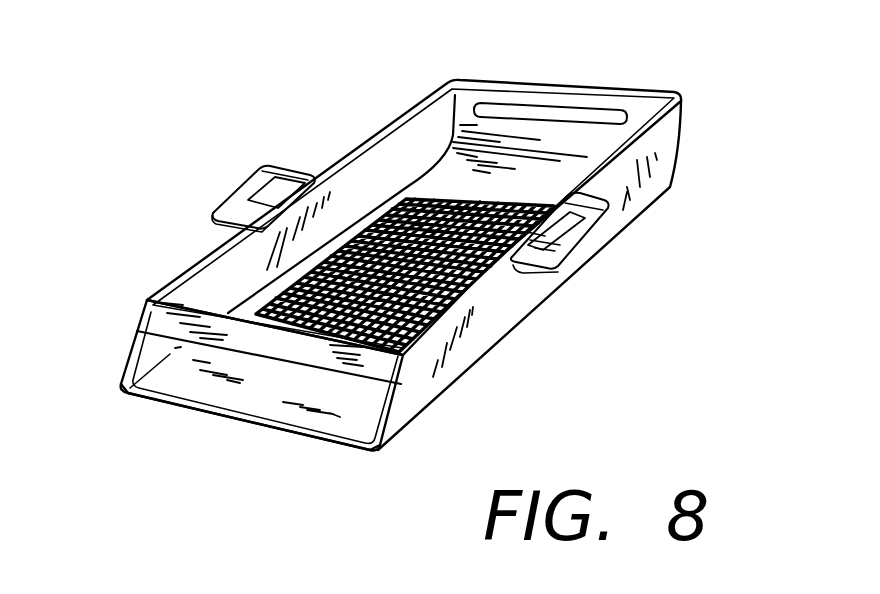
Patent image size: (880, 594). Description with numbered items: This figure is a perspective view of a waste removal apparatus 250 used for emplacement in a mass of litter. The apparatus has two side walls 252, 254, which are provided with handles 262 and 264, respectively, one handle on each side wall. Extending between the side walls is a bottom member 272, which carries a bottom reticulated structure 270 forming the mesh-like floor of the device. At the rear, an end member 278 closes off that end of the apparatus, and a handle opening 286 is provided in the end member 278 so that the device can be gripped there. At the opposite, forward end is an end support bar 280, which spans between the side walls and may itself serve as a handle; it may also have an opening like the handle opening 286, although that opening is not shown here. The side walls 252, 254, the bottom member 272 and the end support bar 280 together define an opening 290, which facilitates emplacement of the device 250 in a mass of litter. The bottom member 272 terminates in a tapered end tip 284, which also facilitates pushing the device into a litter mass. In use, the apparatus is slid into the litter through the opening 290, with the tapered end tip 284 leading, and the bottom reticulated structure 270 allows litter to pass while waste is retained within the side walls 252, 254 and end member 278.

The waste removal apparatus 250 is at (678, 143).
The side wall 252 is at (646, 190).
The side wall 254 is at (403, 140).
The handle 262 is at (595, 258).
The handle 264 is at (273, 167).
The bottom reticulated structure 270 is at (472, 306).
The bottom member 272 is at (270, 292).
The end member 278 is at (640, 100).
The end support bar 280 is at (157, 315).
The tapered end tip 284 is at (307, 441).
The handle opening 286 is at (513, 108).
The opening 290 is at (151, 360).